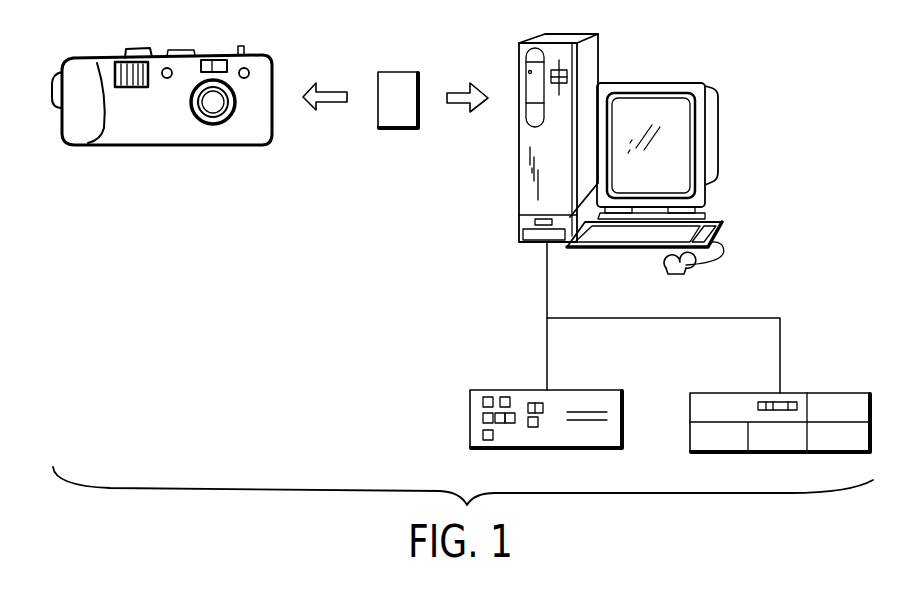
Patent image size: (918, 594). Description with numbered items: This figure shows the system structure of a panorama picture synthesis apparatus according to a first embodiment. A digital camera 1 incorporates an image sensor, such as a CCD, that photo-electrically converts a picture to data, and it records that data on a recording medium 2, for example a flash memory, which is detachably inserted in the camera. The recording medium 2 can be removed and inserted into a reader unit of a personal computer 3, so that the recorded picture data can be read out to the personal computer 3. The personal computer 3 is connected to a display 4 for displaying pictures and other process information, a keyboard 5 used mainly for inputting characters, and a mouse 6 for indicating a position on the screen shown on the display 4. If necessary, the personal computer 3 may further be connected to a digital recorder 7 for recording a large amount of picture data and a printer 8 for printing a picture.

The digital camera 1 is at (178, 146).
The recording medium 2 is at (394, 129).
The personal computer 3 is at (598, 65).
The display 4 is at (670, 138).
The keyboard 5 is at (713, 222).
The mouse 6 is at (672, 275).
The digital recorder 7 is at (491, 391).
The printer 8 is at (751, 394).